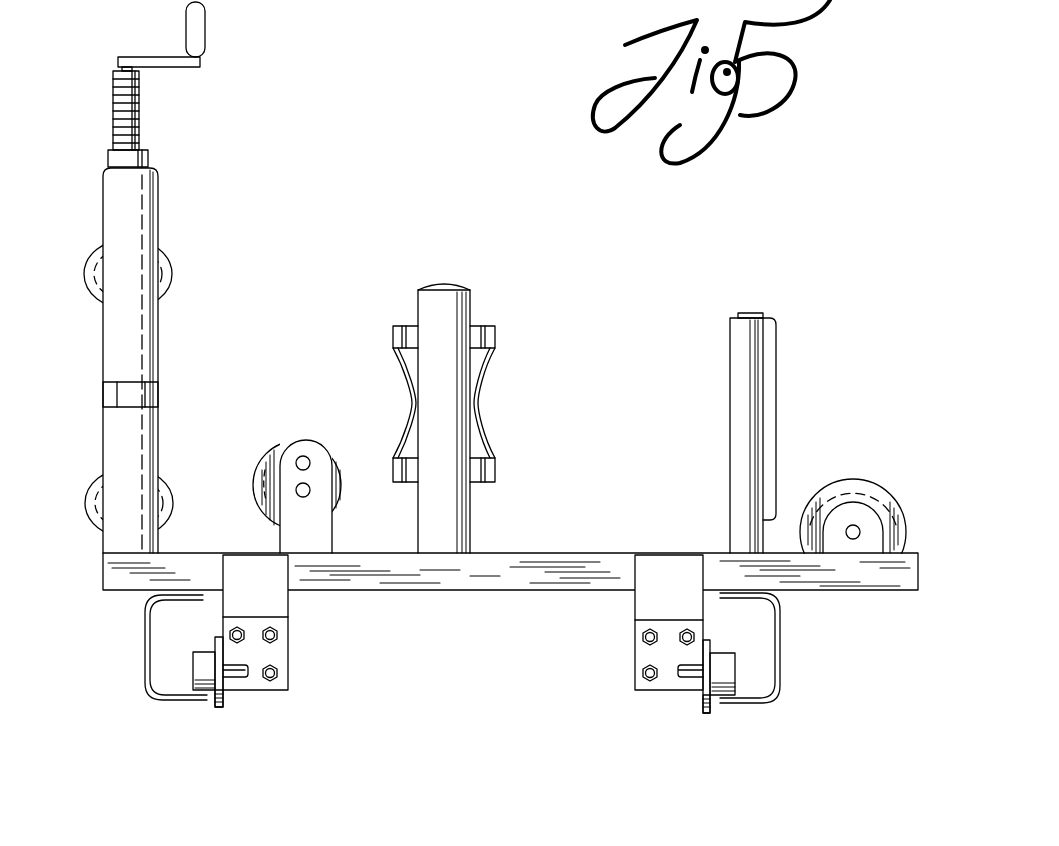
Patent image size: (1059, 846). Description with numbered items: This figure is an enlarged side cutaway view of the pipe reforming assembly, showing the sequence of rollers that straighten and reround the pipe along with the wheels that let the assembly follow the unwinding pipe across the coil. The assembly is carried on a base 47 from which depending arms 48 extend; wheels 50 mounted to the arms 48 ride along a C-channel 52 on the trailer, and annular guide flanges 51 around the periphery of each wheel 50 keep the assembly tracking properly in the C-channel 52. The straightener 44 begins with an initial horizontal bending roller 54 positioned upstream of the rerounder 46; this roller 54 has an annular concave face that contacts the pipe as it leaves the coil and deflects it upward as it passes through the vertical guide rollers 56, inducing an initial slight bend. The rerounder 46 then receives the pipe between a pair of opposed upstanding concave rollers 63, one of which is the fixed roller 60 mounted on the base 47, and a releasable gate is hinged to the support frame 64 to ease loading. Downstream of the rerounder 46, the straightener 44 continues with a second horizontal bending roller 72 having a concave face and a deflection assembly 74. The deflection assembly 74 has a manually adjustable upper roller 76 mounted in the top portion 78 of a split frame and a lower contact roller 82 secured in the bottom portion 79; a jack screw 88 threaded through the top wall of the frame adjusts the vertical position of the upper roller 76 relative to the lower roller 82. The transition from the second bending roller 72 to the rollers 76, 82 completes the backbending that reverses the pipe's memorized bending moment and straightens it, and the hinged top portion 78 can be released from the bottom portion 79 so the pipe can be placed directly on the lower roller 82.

The straightener 44 is at (235, 310).
The rerounder 46 is at (450, 350).
The base 47 is at (527, 583).
The depending arm 48 is at (275, 610).
The wheel 50 is at (250, 675).
The annular guide flange 51 is at (220, 705).
The C-channel 52 is at (150, 700).
The initial horizontal bending roller 54 is at (860, 485).
The vertical guide roller 56 is at (764, 290).
The fixed roller 60 is at (446, 404).
The pair of opposed upstanding rollers 63 is at (405, 380).
The support frame 64 is at (460, 530).
The second horizontal bending roller 72 is at (278, 445).
The deflection assembly 74 is at (207, 162).
The upper roller 76 is at (93, 300).
The top portion 78 is at (108, 213).
The bottom portion 79 is at (100, 432).
The lower contact roller 82 is at (92, 520).
The jack screw 88 is at (115, 110).